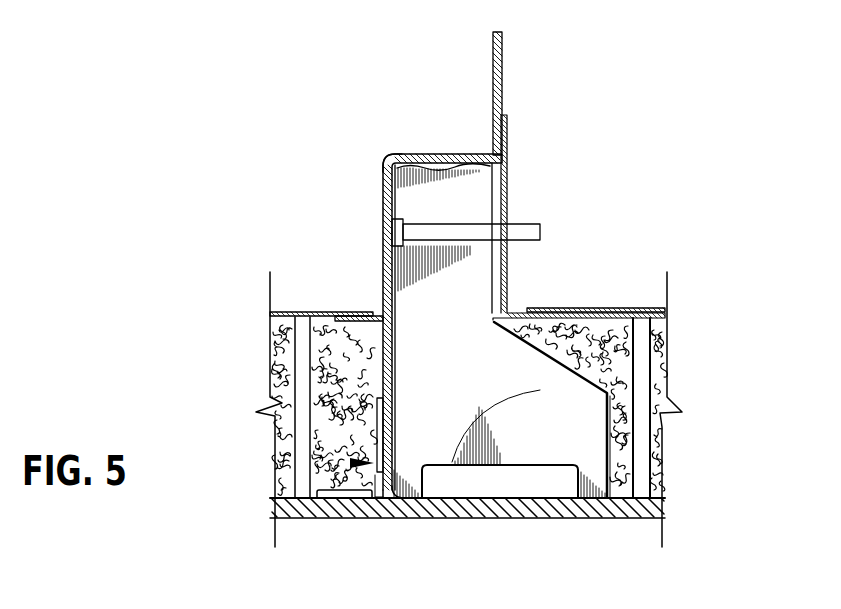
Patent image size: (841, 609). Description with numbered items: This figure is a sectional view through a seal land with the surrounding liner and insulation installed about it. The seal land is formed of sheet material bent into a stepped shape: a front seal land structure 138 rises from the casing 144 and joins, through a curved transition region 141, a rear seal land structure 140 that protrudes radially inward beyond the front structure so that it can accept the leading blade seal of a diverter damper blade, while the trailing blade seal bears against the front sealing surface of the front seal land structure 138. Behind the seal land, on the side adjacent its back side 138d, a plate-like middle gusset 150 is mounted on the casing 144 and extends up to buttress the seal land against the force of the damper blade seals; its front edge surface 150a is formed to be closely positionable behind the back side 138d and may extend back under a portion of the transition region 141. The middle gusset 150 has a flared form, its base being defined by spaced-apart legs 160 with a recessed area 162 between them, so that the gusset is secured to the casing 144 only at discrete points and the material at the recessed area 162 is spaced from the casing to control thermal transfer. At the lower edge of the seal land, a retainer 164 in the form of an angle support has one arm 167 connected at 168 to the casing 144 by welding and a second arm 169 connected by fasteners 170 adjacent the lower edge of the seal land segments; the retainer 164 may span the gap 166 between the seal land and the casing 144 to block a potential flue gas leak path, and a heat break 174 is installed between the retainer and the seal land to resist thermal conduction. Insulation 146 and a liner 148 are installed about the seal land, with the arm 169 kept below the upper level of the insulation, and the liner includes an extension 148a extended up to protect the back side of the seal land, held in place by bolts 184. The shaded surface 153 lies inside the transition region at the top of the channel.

The front seal land structure 138 is at (383, 200).
The back side of front seal land structure 138d is at (400, 498).
The rear seal land structure 140 is at (493, 52).
The transition region 141 is at (393, 153).
The casing 144 is at (485, 518).
The insulation 146 is at (310, 337).
The liner 148 is at (302, 311).
The liner extension 148a is at (508, 178).
The middle gusset 150 is at (470, 285).
The gusset front edge surface 150a is at (392, 492).
The upper surface 153 is at (423, 168).
The legs 160 is at (490, 467).
The recessed area 162 is at (450, 460).
The retainer 164 is at (360, 462).
The gap 166 is at (383, 483).
The first arm 167 is at (293, 483).
The weld connection 168 is at (318, 517).
The second arm 169 is at (377, 412).
The fasteners 170 is at (372, 445).
The heat break 174 is at (383, 382).
The bolts 184 is at (530, 226).